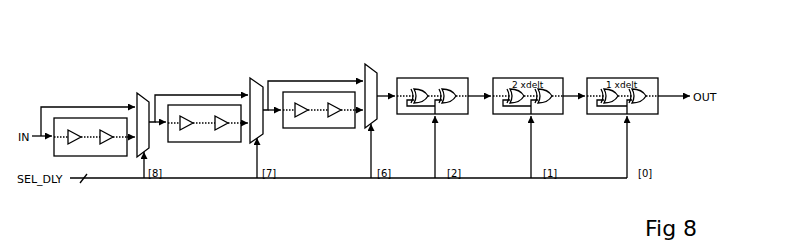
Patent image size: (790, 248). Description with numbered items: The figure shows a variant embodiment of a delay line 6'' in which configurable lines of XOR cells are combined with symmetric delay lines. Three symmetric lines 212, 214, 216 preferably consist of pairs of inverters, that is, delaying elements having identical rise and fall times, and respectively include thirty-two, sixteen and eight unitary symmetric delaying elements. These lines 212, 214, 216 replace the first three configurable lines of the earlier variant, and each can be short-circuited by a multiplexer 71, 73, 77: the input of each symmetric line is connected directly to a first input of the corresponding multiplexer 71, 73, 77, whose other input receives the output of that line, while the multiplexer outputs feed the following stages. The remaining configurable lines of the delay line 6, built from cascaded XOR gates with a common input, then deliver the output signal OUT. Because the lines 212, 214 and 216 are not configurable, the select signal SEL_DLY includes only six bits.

The delay line 6'' is at (72, 33).
The multiplexer 71 is at (140, 93).
The multiplexer 73 is at (253, 80).
The multiplexer 77 is at (367, 65).
The delay line 6 is at (432, 108).
The symmetric delay line 212 is at (107, 142).
The symmetric delay line 214 is at (219, 130).
The symmetric delay line 216 is at (334, 118).